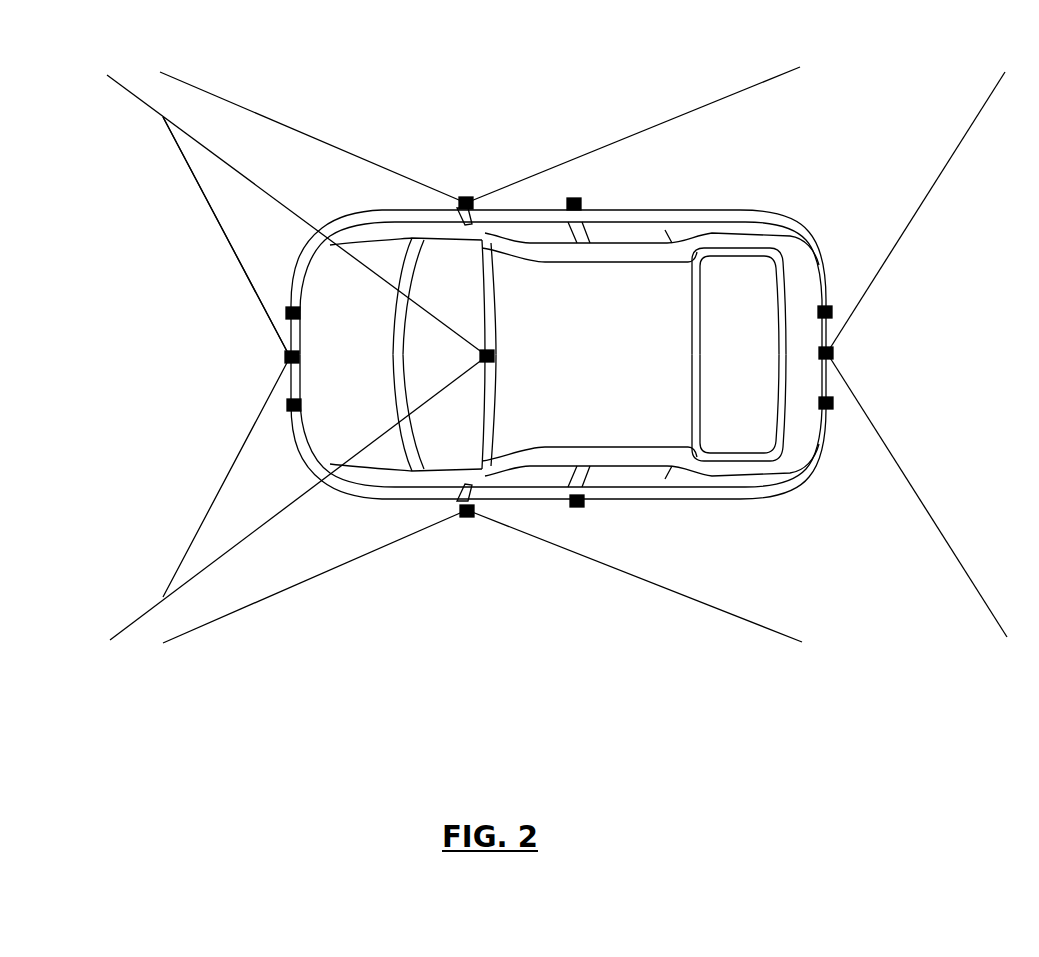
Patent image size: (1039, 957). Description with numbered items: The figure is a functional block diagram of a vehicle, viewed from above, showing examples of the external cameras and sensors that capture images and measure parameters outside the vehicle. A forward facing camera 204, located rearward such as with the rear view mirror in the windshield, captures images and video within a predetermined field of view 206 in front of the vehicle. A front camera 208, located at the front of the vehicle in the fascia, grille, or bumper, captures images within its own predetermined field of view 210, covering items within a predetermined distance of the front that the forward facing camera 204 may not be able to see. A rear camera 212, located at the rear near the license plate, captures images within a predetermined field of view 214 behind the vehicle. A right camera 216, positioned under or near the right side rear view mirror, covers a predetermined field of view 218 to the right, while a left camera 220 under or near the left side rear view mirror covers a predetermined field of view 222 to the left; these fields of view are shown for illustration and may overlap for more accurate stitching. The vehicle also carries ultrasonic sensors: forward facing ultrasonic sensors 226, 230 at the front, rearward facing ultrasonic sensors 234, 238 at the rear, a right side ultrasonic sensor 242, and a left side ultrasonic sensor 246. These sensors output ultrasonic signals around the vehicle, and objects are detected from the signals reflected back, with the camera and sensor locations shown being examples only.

The forward facing camera 204 is at (494, 356).
The field of view 206 is at (272, 196).
The front camera 208 is at (286, 357).
The field of view 210 is at (205, 200).
The rear camera 212 is at (833, 353).
The field of view 214 is at (923, 203).
The right camera 216 is at (465, 197).
The field of view 218 is at (247, 109).
The left camera 220 is at (472, 517).
The field of view 222 is at (588, 558).
The forward facing ultrasonic sensor 226 is at (286, 313).
The forward facing ultrasonic sensor 230 is at (287, 405).
The rearward facing ultrasonic sensor 234 is at (832, 311).
The rearward facing ultrasonic sensor 238 is at (833, 403).
The right side ultrasonic sensor 242 is at (580, 202).
The left side ultrasonic sensor 246 is at (582, 507).